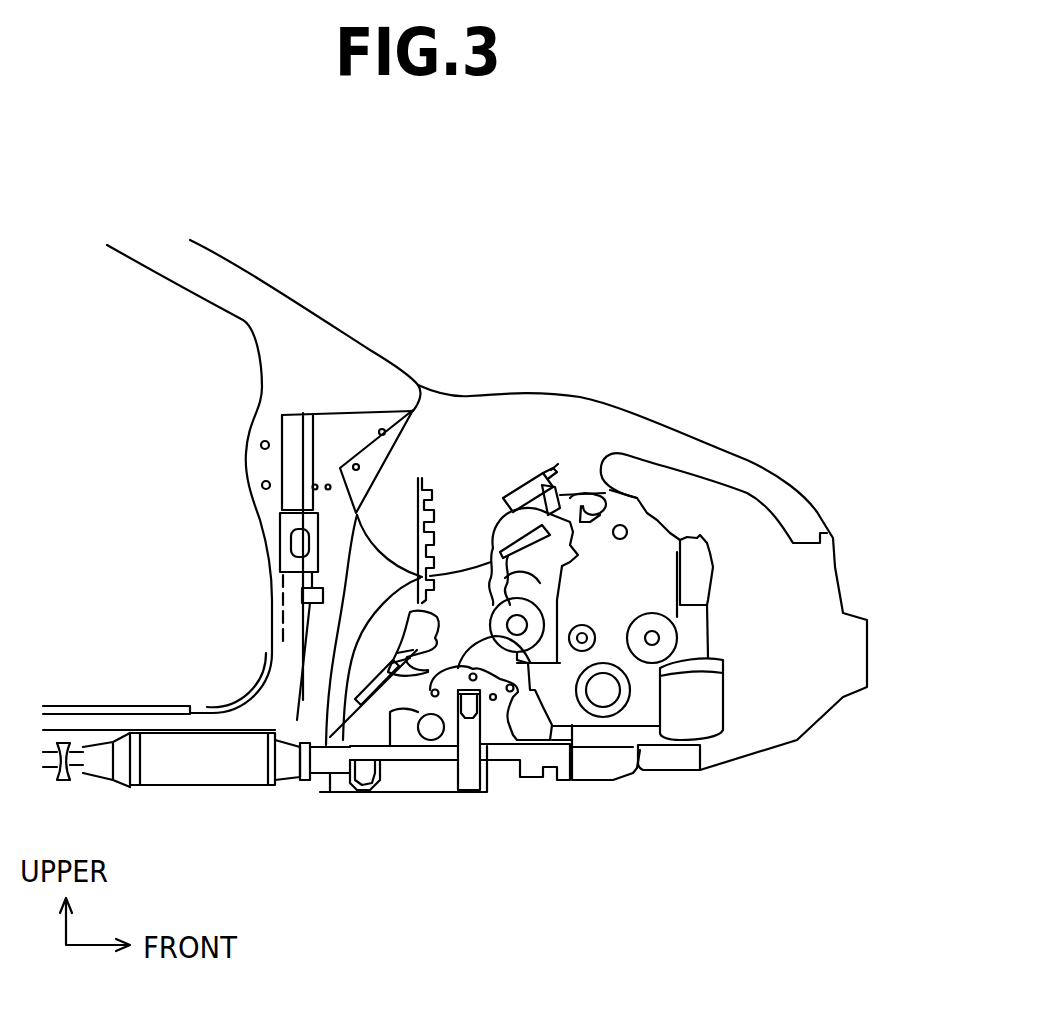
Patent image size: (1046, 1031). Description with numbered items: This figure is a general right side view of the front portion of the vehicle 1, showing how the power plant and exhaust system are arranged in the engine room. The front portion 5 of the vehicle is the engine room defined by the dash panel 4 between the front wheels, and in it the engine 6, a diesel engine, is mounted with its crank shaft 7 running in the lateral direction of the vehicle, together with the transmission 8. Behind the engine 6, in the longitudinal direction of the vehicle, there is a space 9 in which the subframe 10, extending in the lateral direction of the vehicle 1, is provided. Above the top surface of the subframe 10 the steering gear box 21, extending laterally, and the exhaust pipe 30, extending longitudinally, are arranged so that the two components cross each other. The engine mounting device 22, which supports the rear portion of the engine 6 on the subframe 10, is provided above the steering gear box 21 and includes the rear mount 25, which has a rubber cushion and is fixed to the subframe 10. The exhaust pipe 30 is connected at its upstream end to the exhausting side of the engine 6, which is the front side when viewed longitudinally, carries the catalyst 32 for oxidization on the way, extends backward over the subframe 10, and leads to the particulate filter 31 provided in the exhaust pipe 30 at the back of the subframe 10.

The vehicle 1 is at (825, 267).
The dash panel 4 is at (357, 515).
The front portion of the vehicle 5 is at (703, 507).
The engine 6 is at (658, 547).
The crank shaft 7 is at (605, 692).
The transmission 8 is at (533, 727).
The space 9 is at (466, 600).
The subframe 10 is at (383, 787).
The steering gear box 21 is at (431, 727).
The engine mounting device 22 is at (410, 675).
The rear mount 25 is at (433, 653).
The exhaust pipe 30 is at (650, 757).
The particulate filter 31 is at (168, 760).
The catalyst 32 is at (703, 697).